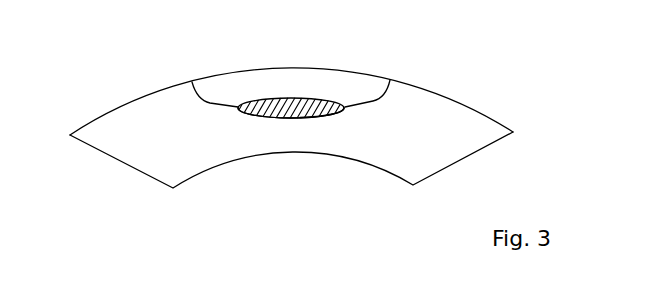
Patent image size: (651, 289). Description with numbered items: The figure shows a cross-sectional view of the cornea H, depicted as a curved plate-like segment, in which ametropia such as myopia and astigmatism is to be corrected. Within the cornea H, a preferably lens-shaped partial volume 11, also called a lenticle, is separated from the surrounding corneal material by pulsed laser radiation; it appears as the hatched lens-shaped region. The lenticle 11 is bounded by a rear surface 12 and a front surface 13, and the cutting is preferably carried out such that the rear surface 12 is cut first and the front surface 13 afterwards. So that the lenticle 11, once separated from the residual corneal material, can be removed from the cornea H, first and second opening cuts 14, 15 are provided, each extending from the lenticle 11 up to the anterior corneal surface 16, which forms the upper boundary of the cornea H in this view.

The cornea H is at (83, 142).
The partial volume 11 is at (260, 123).
The rear surface 12 is at (310, 118).
The front surface 13 is at (282, 99).
The first opening cut 14 is at (373, 101).
The second opening cut 15 is at (210, 103).
The anterior corneal surface 16 is at (483, 108).